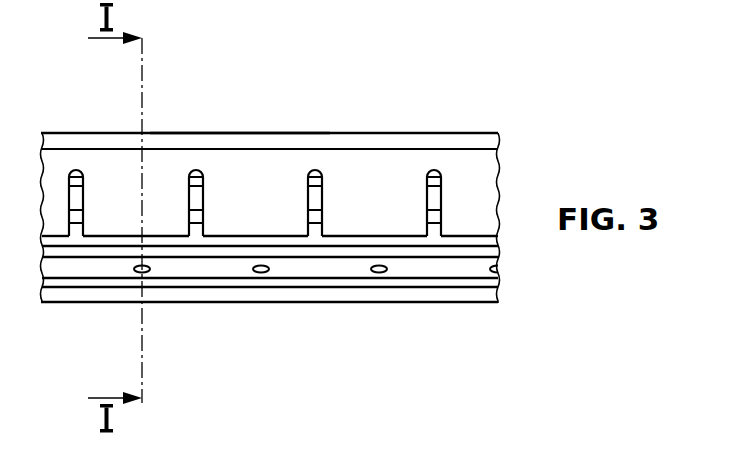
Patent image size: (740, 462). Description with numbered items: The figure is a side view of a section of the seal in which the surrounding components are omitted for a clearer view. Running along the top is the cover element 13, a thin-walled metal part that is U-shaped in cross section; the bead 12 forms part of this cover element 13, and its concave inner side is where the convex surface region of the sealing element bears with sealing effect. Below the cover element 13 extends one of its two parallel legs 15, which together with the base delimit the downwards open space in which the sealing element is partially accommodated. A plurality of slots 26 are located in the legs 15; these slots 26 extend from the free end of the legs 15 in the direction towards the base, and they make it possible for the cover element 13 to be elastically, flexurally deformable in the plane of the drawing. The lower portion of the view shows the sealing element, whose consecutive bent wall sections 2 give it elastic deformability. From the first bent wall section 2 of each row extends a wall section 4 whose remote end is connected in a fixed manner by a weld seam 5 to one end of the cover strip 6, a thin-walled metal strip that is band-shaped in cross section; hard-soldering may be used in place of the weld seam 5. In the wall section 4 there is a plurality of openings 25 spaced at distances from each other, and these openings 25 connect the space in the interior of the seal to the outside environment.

The bent wall section 2 is at (76, 229).
The wall section 4 is at (169, 267).
The weld seam 5 is at (353, 282).
The cover strip 6 is at (446, 316).
The bead 12 is at (85, 141).
The cover element 13 is at (170, 123).
The leg 15 is at (391, 195).
The opening 25 is at (261, 272).
The slot 26 is at (196, 196).